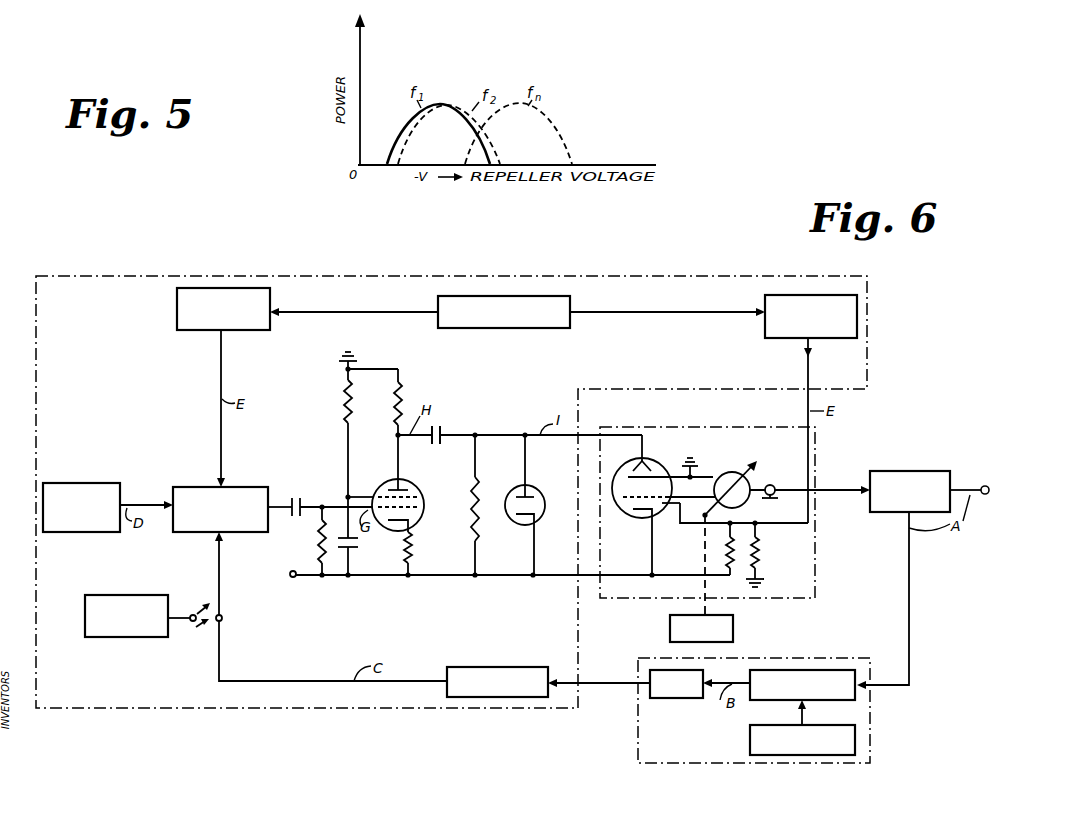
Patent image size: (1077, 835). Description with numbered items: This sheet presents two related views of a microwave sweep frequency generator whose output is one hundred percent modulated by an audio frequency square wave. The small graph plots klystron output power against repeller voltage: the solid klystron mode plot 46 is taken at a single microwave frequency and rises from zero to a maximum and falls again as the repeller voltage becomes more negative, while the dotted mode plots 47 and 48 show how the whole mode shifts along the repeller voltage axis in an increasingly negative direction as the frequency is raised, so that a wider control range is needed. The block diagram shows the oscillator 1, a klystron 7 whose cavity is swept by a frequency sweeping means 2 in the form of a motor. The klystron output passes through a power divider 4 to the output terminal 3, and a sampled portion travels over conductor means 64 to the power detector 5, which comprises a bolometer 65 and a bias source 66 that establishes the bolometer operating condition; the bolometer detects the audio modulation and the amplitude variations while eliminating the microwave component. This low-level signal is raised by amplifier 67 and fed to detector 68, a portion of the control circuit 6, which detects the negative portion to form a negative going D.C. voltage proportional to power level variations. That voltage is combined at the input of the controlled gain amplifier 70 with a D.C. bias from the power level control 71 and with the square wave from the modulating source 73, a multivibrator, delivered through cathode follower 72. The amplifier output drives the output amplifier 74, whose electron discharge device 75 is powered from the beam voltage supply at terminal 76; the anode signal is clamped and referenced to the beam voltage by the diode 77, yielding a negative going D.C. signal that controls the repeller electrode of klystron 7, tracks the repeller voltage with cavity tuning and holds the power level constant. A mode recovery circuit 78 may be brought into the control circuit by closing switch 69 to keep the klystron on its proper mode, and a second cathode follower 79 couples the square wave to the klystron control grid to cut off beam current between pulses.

In FIG. 5, the klystron mode plot 46 is at (392, 143).
In FIG. 5, the dotted mode plot 47 is at (455, 105).
In FIG. 5, the dotted mode plot 48 is at (548, 117).
In FIG. 6, the oscillator 1 is at (818, 545).
In FIG. 6, the frequency sweeping means 2 is at (733, 630).
In FIG. 6, the output terminal 3 is at (986, 487).
In FIG. 6, the power divider 4 is at (907, 471).
In FIG. 6, the power detector 5 is at (680, 768).
In FIG. 6, the control circuit 6 is at (259, 714).
In FIG. 6, the klystron 7 is at (653, 458).
In FIG. 6, the conductor means 64 is at (909, 614).
In FIG. 6, the bolometer 65 is at (829, 670).
In FIG. 6, the bias source 66 is at (830, 726).
In FIG. 6, the amplifier 67 is at (665, 699).
In FIG. 6, the detector 68 is at (526, 667).
In FIG. 6, the switch 69 is at (195, 633).
In FIG. 6, the controlled gain amplifier 70 is at (251, 487).
In FIG. 6, the power level control 71 is at (88, 483).
In FIG. 6, the cathode follower 72 is at (236, 331).
In FIG. 6, the modulating source 73 is at (485, 329).
In FIG. 6, the output amplifier 74 is at (442, 409).
In FIG. 6, the electron discharge device 75 is at (418, 488).
In FIG. 6, the terminal 76 is at (293, 571).
In FIG. 6, the diode 77 is at (542, 489).
In FIG. 6, the mode recovery circuit 78 is at (122, 637).
In FIG. 6, the cathode follower 79 is at (790, 339).